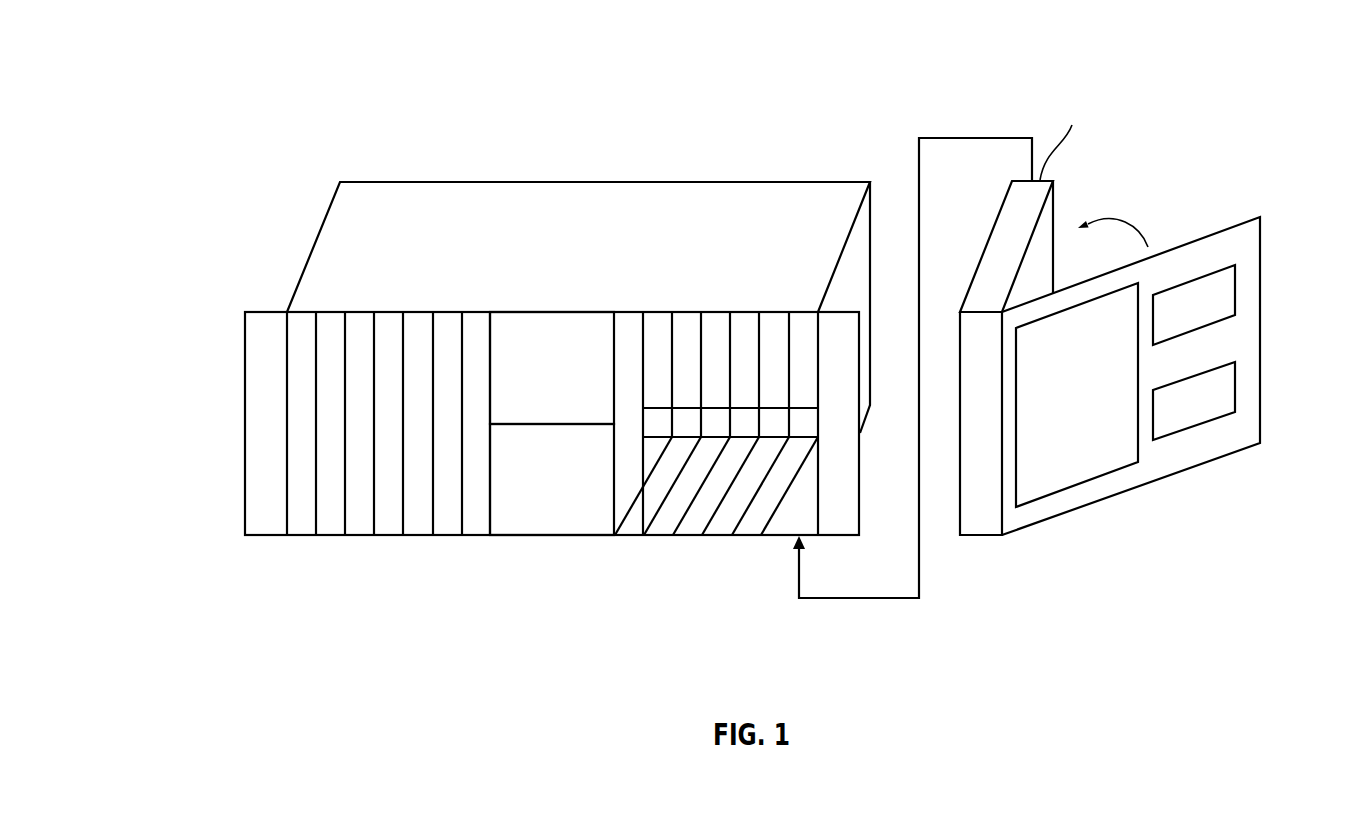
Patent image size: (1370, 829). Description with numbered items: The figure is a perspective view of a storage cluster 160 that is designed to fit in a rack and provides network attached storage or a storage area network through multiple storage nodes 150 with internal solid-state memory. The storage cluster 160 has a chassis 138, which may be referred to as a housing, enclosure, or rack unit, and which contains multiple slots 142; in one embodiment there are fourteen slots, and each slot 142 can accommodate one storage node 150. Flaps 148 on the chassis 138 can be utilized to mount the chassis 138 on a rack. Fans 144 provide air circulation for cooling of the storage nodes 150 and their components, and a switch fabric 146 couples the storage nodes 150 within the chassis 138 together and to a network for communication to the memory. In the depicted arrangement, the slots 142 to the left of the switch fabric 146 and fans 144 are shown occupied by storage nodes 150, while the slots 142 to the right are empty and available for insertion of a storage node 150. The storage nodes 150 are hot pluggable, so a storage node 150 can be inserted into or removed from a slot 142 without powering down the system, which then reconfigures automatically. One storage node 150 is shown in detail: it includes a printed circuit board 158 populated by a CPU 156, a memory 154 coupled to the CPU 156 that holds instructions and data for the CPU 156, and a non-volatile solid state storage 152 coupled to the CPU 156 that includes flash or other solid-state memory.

The storage cluster 160 is at (260, 76).
The chassis 138 is at (408, 180).
The flaps 148 is at (245, 423).
The storage node 150 is at (300, 535).
The switch fabric 146 is at (557, 310).
The fans 144 is at (553, 535).
The slot 142 is at (783, 535).
The printed circuit board 158 is at (1262, 243).
The non-volatile solid state storage 152 is at (1075, 487).
The memory 154 is at (1195, 278).
The CPU 156 is at (1237, 383).